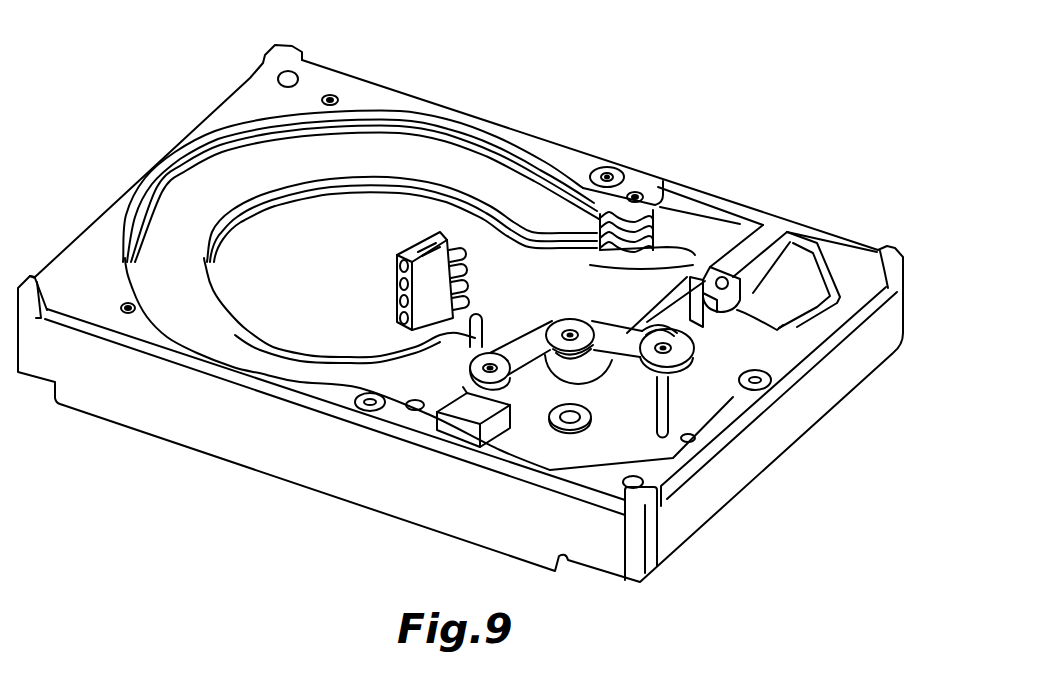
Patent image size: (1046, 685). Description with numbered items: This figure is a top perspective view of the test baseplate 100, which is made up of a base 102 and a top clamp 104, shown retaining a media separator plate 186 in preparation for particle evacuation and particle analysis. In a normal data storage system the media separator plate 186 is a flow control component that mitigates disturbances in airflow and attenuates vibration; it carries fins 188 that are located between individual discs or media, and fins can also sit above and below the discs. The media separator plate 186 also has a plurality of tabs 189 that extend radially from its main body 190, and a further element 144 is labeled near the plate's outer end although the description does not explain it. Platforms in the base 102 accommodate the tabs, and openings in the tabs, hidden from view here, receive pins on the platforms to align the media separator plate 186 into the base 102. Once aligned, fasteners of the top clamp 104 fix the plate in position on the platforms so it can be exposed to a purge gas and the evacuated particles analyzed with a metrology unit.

The test baseplate 100 is at (642, 150).
The base 102 is at (714, 509).
The top clamp 104 is at (386, 88).
The hinge assembly 144 is at (610, 253).
The media separator plate 186 is at (217, 176).
The fins 188 is at (252, 205).
The tabs 189 is at (340, 130).
The main body 190 is at (447, 160).